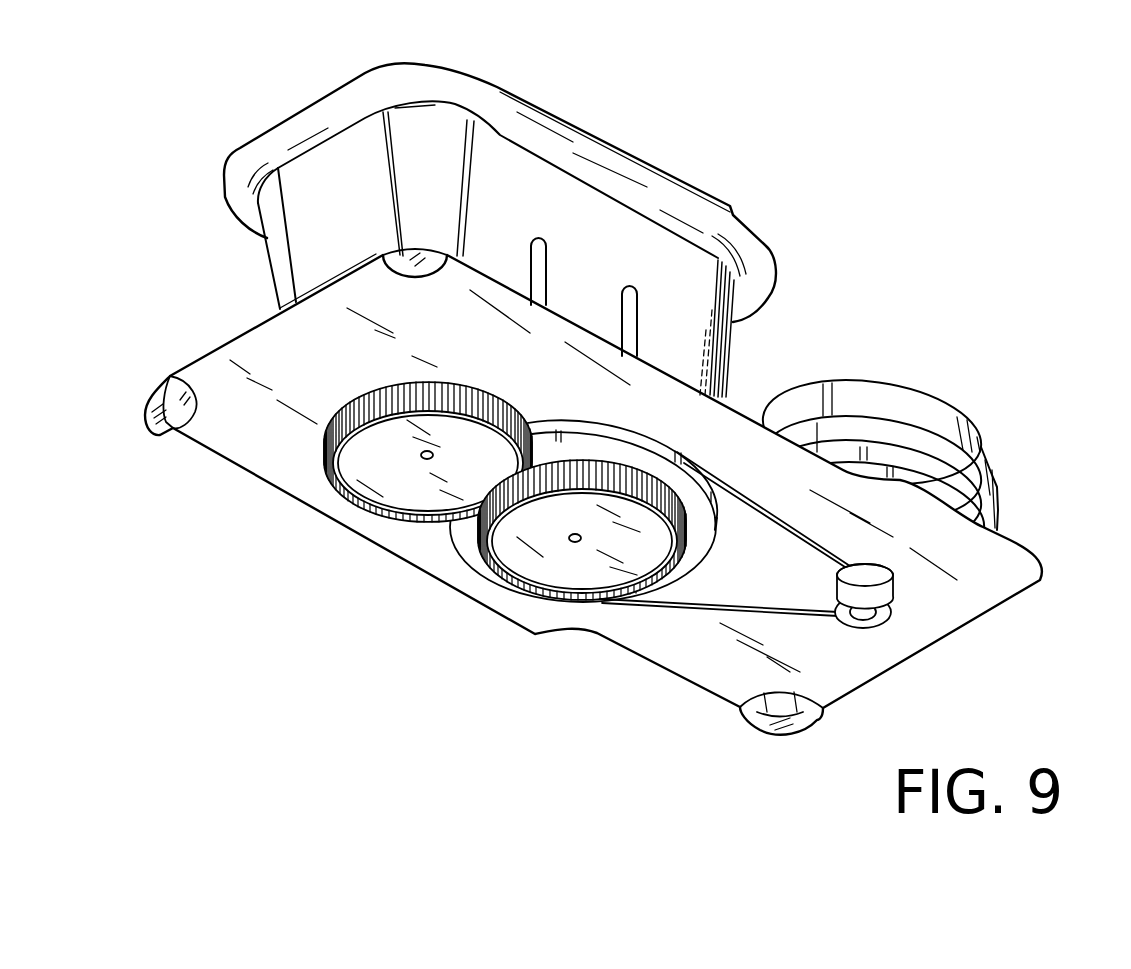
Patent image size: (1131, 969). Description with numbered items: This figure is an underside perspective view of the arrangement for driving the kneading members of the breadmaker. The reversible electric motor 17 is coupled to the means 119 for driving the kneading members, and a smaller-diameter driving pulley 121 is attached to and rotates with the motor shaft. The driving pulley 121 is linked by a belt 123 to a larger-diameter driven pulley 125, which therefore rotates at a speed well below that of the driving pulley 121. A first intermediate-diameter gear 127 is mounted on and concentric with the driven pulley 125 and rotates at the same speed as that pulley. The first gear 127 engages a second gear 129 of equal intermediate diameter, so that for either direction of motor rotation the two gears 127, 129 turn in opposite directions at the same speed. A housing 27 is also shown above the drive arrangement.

The reversible electric motor 17 is at (940, 418).
The housing 27 is at (457, 95).
The means for driving the kneading members 119 is at (398, 585).
The driving pulley 121 is at (882, 617).
The belt 123 is at (703, 600).
The driven pulley 125 is at (687, 483).
The first gear 127 is at (563, 568).
The second gear 129 is at (370, 470).